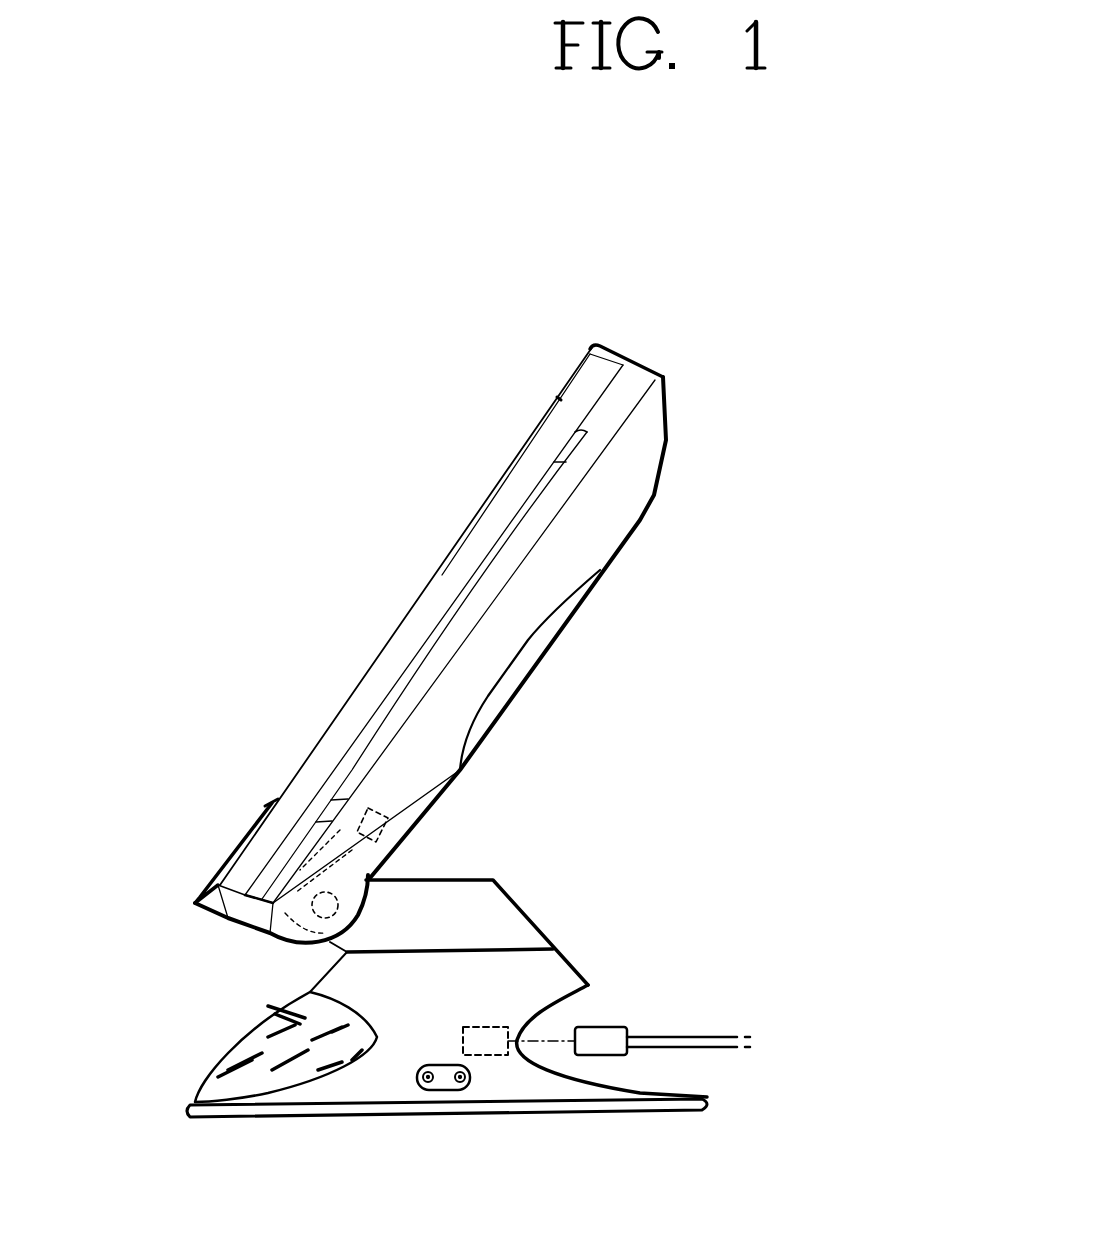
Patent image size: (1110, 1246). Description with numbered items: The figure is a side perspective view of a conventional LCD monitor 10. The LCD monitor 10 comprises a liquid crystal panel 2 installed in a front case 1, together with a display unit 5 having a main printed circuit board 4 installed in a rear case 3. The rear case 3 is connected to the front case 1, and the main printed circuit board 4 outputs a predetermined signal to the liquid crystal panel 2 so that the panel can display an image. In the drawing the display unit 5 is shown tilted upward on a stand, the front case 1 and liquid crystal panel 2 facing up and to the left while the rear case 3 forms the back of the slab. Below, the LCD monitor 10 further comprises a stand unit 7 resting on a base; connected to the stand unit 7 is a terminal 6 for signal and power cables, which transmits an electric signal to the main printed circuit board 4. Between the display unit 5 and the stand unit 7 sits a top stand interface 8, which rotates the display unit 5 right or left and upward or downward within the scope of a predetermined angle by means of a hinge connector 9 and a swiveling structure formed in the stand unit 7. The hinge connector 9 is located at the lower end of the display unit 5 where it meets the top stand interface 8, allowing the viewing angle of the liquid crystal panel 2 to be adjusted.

The LCD monitor 10 is at (85, 334).
The front case 1 is at (232, 848).
The liquid crystal panel 2 is at (455, 585).
The rear case 3 is at (637, 447).
The main printed circuit board 4 is at (428, 647).
The display unit 5 is at (665, 587).
The terminal 6 is at (605, 1027).
The stand unit 7 is at (533, 1077).
The top stand interface 8 is at (505, 925).
The hinge connector 9 is at (392, 850).